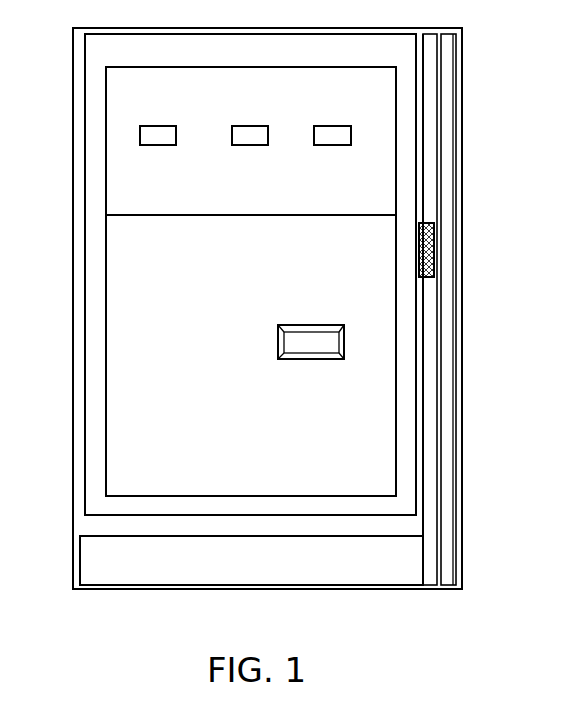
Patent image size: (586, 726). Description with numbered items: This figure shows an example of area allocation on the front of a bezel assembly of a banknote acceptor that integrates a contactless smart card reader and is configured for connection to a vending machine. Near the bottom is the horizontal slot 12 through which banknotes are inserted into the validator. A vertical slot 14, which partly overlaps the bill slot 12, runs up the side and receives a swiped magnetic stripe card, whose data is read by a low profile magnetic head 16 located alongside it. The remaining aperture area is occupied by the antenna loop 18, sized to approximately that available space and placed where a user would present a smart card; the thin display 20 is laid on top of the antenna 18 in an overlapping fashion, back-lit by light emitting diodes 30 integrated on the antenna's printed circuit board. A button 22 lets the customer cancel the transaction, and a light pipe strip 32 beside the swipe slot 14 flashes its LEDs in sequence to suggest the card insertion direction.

The horizontal slot 12 is at (92, 565).
The vertical slot 14 is at (428, 436).
The low profile magnetic head 16 is at (432, 262).
The antenna loop 18 is at (97, 348).
The display 20 is at (118, 167).
The button 22 is at (290, 346).
The light emitting diodes 30 is at (313, 116).
The light pipe strip 32 is at (447, 561).